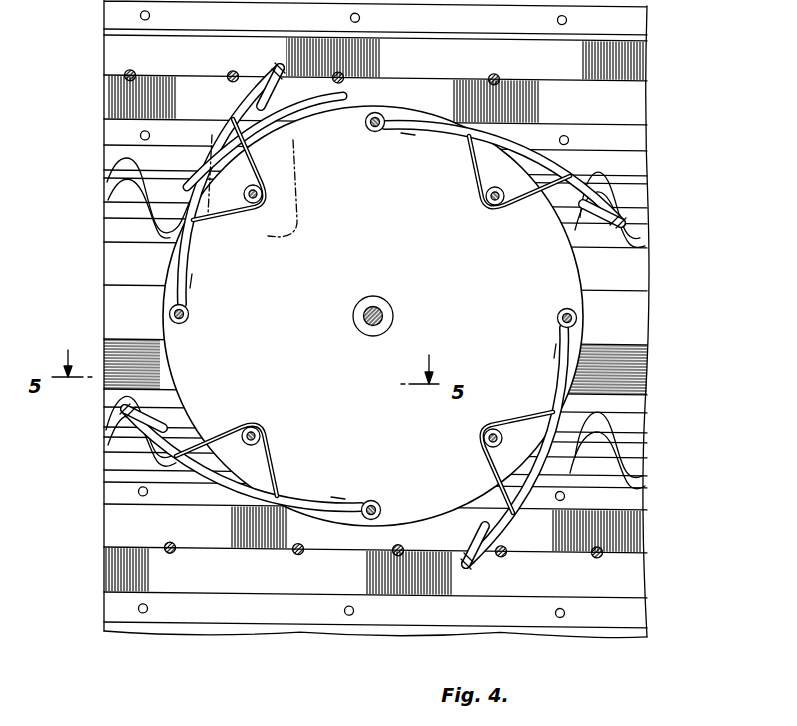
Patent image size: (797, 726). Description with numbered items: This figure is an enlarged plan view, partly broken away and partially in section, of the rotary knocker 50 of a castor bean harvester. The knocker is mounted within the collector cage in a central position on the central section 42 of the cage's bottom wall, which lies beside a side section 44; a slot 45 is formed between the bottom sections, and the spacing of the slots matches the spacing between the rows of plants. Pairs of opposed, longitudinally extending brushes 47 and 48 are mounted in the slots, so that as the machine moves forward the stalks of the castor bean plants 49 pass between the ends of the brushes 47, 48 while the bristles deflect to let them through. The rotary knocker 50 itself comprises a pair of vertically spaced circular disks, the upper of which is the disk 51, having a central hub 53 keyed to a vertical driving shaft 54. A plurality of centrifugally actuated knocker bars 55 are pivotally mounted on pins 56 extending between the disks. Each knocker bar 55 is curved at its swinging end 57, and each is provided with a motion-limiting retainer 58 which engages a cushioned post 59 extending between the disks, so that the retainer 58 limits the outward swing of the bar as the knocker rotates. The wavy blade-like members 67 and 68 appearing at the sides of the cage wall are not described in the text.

The central section 42 is at (100, 308).
The side section 44 is at (108, 605).
The slot 45 is at (108, 16).
The brush 47 is at (108, 57).
The brush 48 is at (108, 110).
The castor bean plant 49 is at (126, 77).
The rotary knocker 50 is at (588, 276).
The circular disk 51 is at (348, 358).
The central hub 53 is at (393, 314).
The vertical driving shaft 54 is at (356, 316).
The knocker bar 55 is at (300, 124).
The pin 56 is at (378, 132).
The swinging end 57 is at (273, 68).
The motion-limiting retainer 58 is at (220, 138).
The cushioned post 59 is at (262, 193).
The blade 67 is at (110, 193).
The blade 68 is at (118, 432).